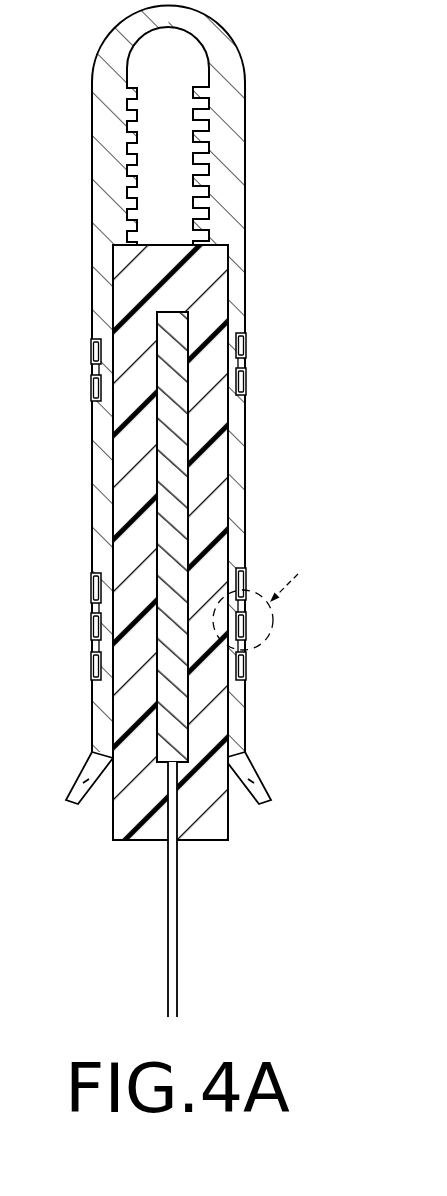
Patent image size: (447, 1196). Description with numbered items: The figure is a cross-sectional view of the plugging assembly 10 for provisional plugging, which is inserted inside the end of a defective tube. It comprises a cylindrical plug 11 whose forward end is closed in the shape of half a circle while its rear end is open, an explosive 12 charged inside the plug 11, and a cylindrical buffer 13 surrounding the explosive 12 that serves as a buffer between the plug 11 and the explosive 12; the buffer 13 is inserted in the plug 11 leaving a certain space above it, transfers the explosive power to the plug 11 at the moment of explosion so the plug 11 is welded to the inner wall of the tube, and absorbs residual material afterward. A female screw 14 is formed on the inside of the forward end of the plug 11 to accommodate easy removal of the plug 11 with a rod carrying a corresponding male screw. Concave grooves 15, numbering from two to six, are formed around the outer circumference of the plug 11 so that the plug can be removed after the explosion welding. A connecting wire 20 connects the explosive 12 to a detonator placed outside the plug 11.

The plugging assembly 10 is at (217, 512).
The plug 11 is at (178, 405).
The explosive 12 is at (162, 531).
The buffer 13 is at (215, 486).
The female screw 14 is at (192, 130).
The grooves 15 is at (91, 389).
The connecting wire 20 is at (178, 925).